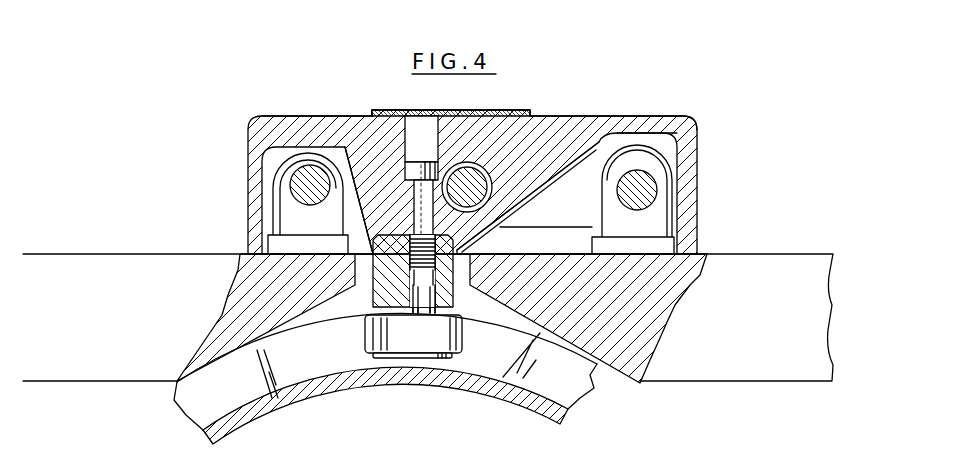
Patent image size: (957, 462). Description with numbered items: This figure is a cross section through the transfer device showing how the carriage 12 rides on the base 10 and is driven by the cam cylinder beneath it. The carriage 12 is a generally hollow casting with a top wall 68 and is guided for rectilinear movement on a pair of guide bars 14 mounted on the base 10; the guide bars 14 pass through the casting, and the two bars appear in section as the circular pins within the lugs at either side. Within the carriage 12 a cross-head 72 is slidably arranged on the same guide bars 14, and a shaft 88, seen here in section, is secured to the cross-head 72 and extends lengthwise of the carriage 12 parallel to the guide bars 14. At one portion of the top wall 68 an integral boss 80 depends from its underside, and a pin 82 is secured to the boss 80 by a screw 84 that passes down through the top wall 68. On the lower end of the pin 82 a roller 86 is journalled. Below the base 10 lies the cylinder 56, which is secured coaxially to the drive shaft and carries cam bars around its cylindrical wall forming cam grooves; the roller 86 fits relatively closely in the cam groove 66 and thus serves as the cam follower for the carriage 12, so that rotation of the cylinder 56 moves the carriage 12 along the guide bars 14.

The base 10 is at (795, 357).
The carriage 12 is at (702, 181).
The guide bars 14 is at (292, 188).
The cylinder 56 is at (452, 376).
The cam groove 66 is at (347, 358).
The top wall 68 is at (628, 126).
The cross-head 72 is at (551, 221).
The boss 80 is at (525, 172).
The pin 82 is at (409, 296).
The screw 84 is at (422, 166).
The roller 86 is at (462, 340).
The shaft 88 is at (472, 177).